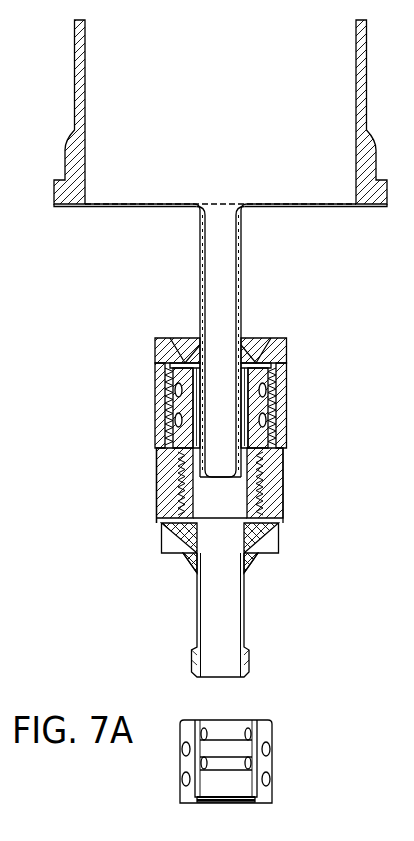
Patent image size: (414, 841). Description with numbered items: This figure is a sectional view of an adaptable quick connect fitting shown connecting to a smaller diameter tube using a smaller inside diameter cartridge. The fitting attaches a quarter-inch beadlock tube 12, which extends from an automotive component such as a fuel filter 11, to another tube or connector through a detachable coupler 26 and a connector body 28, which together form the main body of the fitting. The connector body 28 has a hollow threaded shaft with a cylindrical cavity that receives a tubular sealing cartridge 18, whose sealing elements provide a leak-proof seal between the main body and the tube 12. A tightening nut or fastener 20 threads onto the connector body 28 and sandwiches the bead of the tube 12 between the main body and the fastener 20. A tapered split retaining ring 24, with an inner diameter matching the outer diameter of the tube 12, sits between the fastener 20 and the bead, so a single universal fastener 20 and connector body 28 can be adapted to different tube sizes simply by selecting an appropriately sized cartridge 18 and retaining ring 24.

The fuel filter 11 is at (342, 80).
The tube 12 is at (225, 287).
The sealing cartridge 18 is at (178, 406).
The tightening nut 20 is at (280, 344).
The retaining ring 24 is at (185, 347).
The detachable coupler 26 is at (243, 611).
The connector body 28 is at (273, 493).